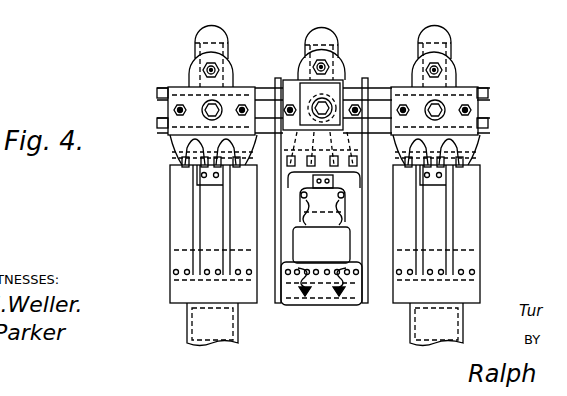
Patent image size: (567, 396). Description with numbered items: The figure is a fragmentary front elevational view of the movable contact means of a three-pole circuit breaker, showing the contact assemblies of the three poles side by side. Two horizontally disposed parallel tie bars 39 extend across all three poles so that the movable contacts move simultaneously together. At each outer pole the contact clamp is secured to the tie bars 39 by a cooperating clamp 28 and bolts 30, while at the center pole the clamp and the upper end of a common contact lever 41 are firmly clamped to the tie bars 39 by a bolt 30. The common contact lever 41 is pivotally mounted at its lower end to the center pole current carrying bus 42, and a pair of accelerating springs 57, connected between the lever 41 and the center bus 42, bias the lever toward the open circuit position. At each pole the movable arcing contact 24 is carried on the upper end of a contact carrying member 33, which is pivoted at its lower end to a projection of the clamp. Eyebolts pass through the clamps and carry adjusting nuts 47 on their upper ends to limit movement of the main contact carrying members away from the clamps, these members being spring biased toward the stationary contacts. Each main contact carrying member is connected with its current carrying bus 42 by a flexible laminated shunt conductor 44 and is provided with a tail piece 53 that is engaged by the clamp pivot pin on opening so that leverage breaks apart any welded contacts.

The movable arcing contact 24 is at (213, 30).
The cooperating clamp 28 is at (185, 86).
The bolt 30 is at (220, 100).
The contact carrying member 33 is at (196, 148).
The tie bar 39 is at (488, 93).
The common contact lever 41 is at (366, 199).
The current carrying bus 42 is at (240, 323).
The flexible laminated shunt conductor 44 is at (205, 220).
The adjusting nut 47 is at (216, 66).
The tail piece 53 is at (196, 170).
The accelerating spring 57 is at (342, 275).